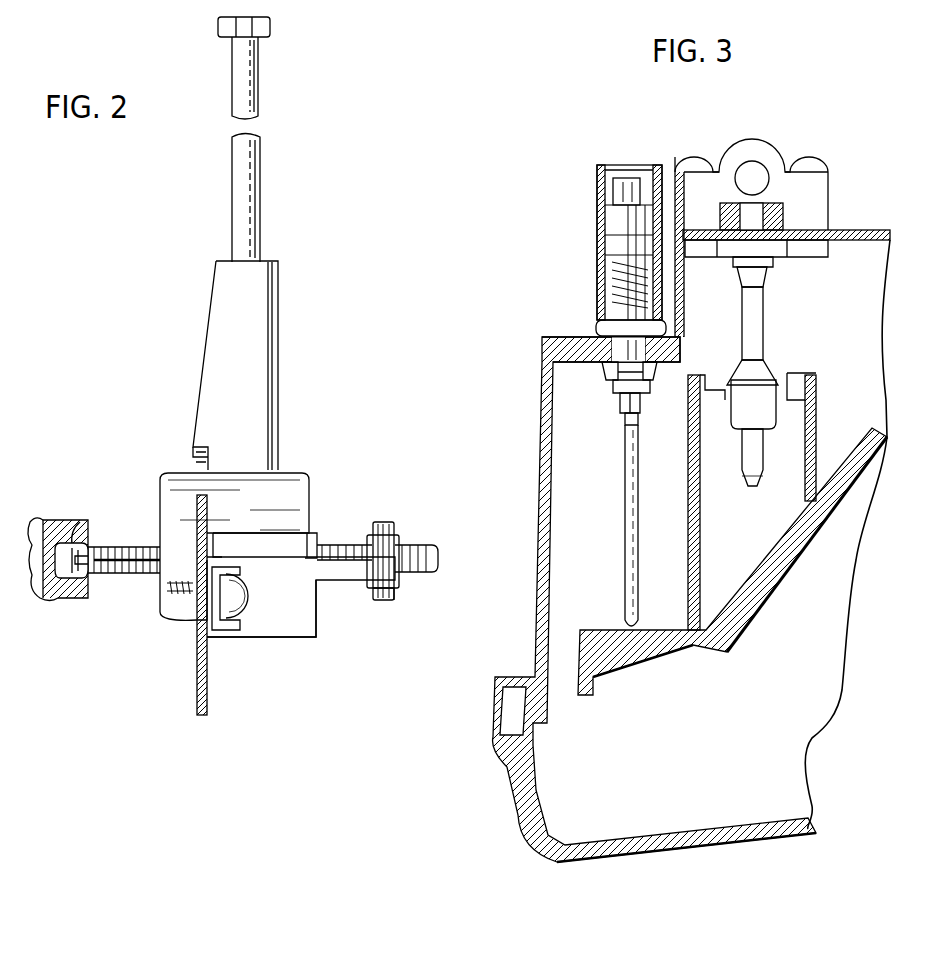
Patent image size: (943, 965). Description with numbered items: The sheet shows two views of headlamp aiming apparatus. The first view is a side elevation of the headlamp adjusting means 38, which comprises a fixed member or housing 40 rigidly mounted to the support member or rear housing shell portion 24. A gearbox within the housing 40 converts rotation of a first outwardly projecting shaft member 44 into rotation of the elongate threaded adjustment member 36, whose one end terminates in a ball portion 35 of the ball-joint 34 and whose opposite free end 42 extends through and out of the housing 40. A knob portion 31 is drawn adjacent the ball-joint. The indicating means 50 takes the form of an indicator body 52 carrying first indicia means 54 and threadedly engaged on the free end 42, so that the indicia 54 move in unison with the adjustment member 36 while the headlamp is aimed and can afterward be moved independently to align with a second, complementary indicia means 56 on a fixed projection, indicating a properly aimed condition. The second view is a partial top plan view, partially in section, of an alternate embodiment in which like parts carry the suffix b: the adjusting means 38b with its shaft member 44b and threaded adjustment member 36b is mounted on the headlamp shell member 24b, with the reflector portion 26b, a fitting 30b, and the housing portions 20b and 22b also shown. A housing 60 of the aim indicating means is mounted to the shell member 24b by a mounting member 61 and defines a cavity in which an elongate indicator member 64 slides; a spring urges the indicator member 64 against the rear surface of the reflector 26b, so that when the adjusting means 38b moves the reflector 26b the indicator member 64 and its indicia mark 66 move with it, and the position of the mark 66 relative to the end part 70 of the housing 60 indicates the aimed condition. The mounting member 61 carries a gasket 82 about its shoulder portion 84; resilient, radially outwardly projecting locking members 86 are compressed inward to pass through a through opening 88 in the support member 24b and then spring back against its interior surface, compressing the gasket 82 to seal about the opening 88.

In FIG. 2, the first outwardly projecting shaft member 44 is at (248, 178).
In FIG. 2, the headlamp adjusting means 38 is at (185, 348).
In FIG. 2, the fixed member or housing 40 is at (297, 472).
In FIG. 2, the support member or rear housing shell portion 24 is at (212, 712).
In FIG. 2, the second, complementary indicia means 56 is at (308, 628).
In FIG. 2, the free end 42 is at (438, 558).
In FIG. 2, the first indicia means 54 is at (383, 522).
In FIG. 2, the indicator body 52 is at (393, 524).
In FIG. 2, the indicating means 50 is at (386, 602).
In FIG. 2, the knob 31 is at (56, 520).
In FIG. 2, the ball-joint 34 is at (82, 520).
In FIG. 2, the ball portion 35 is at (70, 605).
In FIG. 2, the elongate threaded adjustment member 36 is at (132, 573).
In FIG. 3, the outer housing wall 22b is at (530, 836).
In FIG. 3, the housing 20b is at (656, 866).
In FIG. 3, the support or headlamp shell member 24b is at (550, 337).
In FIG. 3, the through opening 88 is at (615, 346).
In FIG. 3, the headlamp reflector portion 26b is at (757, 607).
In FIG. 3, the headlamp adjusting means 38b is at (830, 190).
In FIG. 3, the first outwardly projecting shaft member 44b is at (750, 170).
In FIG. 3, the elongate threaded adjustment member 36b is at (765, 325).
In FIG. 3, the fitting 30b is at (802, 398).
In FIG. 3, the mounting member 61 is at (598, 180).
In FIG. 3, the housing 60 is at (605, 250).
In FIG. 3, the shoulder portion 84 is at (600, 318).
In FIG. 3, the sealing member or gasket 82 is at (668, 328).
In FIG. 3, the locking members 86 is at (600, 366).
In FIG. 3, the end part 70 is at (640, 415).
In FIG. 3, the indicia means or mark 66 is at (625, 435).
In FIG. 3, the elongate indicator member 64 is at (628, 545).